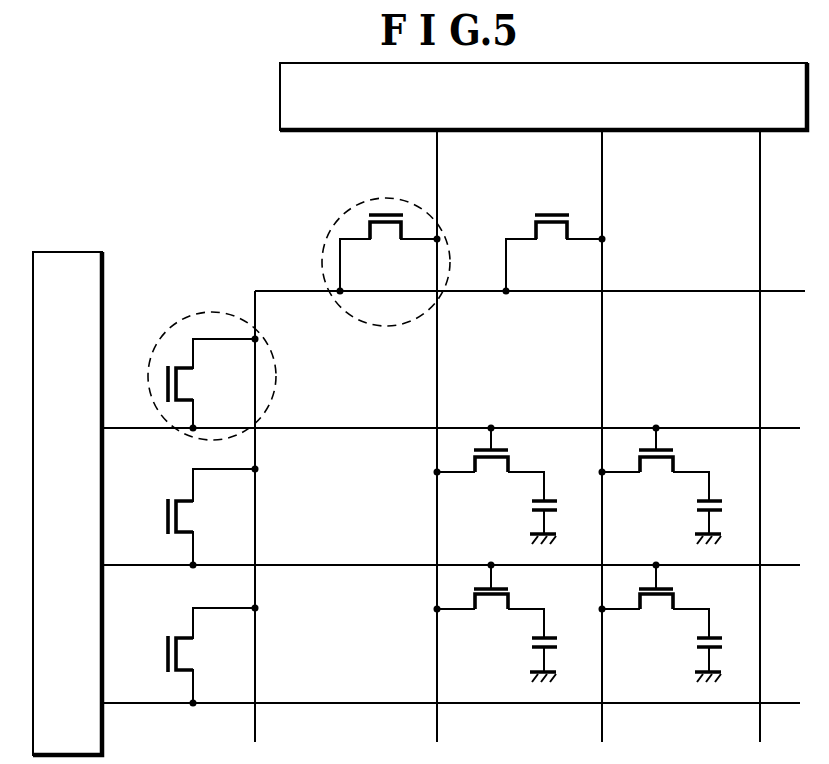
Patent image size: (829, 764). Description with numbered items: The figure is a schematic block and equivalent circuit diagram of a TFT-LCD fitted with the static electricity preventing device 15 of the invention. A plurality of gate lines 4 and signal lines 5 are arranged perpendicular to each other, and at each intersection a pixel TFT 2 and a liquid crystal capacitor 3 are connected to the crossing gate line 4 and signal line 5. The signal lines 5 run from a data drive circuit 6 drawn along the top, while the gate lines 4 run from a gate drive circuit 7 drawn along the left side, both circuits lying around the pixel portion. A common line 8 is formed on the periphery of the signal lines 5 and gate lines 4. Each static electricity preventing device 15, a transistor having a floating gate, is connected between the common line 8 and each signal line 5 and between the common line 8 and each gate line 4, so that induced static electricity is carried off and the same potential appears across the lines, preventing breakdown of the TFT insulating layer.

The pixel TFT 2 is at (675, 452).
The liquid crystal capacitor 3 is at (694, 506).
The gate line 4 is at (345, 700).
The signal line 5 is at (440, 722).
The data drive circuit 6 is at (280, 100).
The gate drive circuit 7 is at (61, 266).
The common line 8 is at (786, 290).
The static electricity preventing device 15 is at (208, 323).